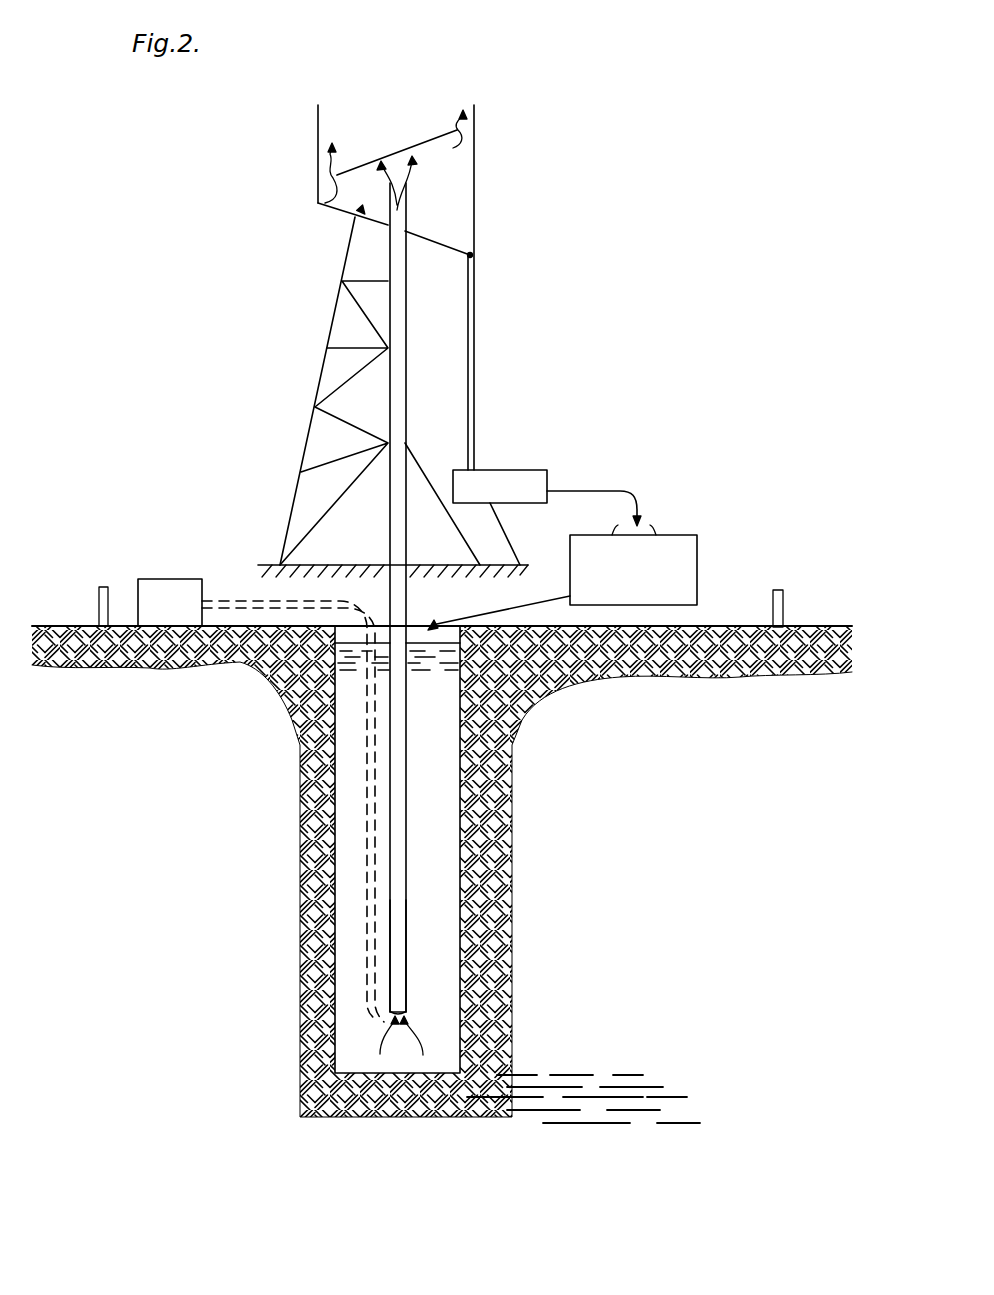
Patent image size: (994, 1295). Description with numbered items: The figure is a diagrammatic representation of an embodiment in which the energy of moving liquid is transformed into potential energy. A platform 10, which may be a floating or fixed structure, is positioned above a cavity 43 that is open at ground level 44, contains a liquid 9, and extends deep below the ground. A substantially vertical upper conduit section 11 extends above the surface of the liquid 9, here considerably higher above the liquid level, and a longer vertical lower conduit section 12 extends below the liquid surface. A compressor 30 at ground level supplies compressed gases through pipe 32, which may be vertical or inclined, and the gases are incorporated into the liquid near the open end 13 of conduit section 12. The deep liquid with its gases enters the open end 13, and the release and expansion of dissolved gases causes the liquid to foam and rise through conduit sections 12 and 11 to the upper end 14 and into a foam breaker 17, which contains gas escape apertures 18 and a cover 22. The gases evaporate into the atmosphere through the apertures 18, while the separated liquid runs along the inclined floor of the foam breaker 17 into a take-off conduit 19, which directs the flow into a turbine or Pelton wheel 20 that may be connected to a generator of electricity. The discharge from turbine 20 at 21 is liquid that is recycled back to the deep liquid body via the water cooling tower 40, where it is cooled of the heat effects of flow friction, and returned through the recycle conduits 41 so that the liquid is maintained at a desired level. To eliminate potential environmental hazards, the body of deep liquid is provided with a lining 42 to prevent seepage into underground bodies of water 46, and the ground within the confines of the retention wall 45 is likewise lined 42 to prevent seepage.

The liquid 9 is at (347, 647).
The platform 10 is at (323, 381).
The upper conduit section 11 is at (398, 526).
The lower conduit section 12 is at (402, 915).
The open end of conduit section 13 is at (407, 1000).
The upper end 14 is at (402, 193).
The foam breaker 17 is at (433, 243).
The gas escape apertures 18 is at (325, 203).
The take-off conduit 19 is at (476, 331).
The turbine 20 is at (497, 478).
The turbine discharge 21 is at (587, 495).
The cover 22 is at (388, 157).
The compressor 30 is at (160, 579).
The pipe 32 is at (367, 897).
The cooling tower 40 is at (682, 535).
The recycle conduits 41 is at (542, 597).
The lining 42 is at (124, 618).
The cavity 43 is at (427, 843).
The ground level 44 is at (70, 626).
The retention wall 45 is at (110, 598).
The underground bodies of water 46 is at (577, 1082).